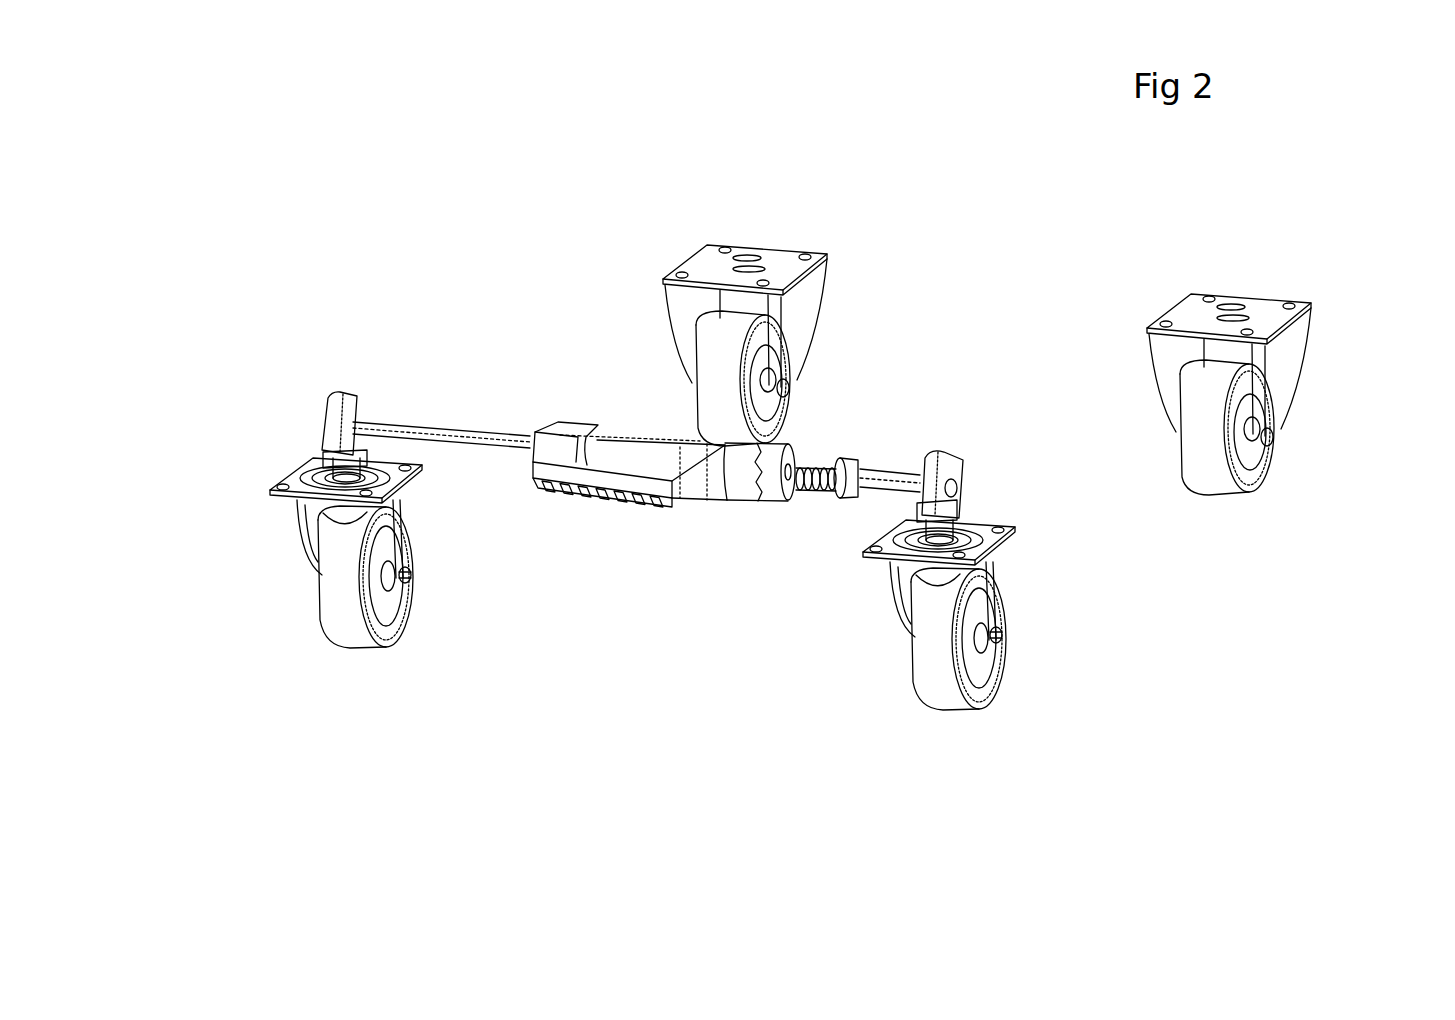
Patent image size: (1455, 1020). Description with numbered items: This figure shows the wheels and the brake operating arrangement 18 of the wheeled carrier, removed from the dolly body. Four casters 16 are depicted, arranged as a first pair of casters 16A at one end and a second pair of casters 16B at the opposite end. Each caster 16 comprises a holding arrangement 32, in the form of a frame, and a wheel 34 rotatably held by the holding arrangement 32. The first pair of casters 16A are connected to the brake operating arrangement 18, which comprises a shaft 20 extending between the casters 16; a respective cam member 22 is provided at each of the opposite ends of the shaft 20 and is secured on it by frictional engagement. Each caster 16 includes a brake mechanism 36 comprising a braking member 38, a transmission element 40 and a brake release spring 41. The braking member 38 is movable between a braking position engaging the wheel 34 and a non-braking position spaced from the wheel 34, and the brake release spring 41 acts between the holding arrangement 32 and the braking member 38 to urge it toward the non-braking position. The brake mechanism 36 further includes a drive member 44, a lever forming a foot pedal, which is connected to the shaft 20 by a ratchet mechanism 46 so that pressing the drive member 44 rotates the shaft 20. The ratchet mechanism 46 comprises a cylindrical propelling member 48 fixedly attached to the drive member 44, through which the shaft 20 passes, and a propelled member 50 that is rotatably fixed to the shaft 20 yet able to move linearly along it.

The caster 16 is at (337, 605).
The first pair of casters 16A is at (290, 556).
The second pair of casters 16B is at (635, 252).
The brake operating arrangement 18 is at (605, 541).
The shaft 20 is at (882, 477).
The cam member 22 is at (328, 426).
The holding arrangement 32 is at (397, 530).
The wheel 34 is at (350, 627).
The brake mechanism 36 is at (357, 552).
The braking member 38 is at (350, 522).
The transmission element 40 is at (300, 466).
The brake release spring 41 is at (360, 482).
The drive member 44 is at (665, 505).
The ratchet mechanism 46 is at (815, 431).
The propelling member 48 is at (745, 482).
The propelled member 50 is at (783, 445).